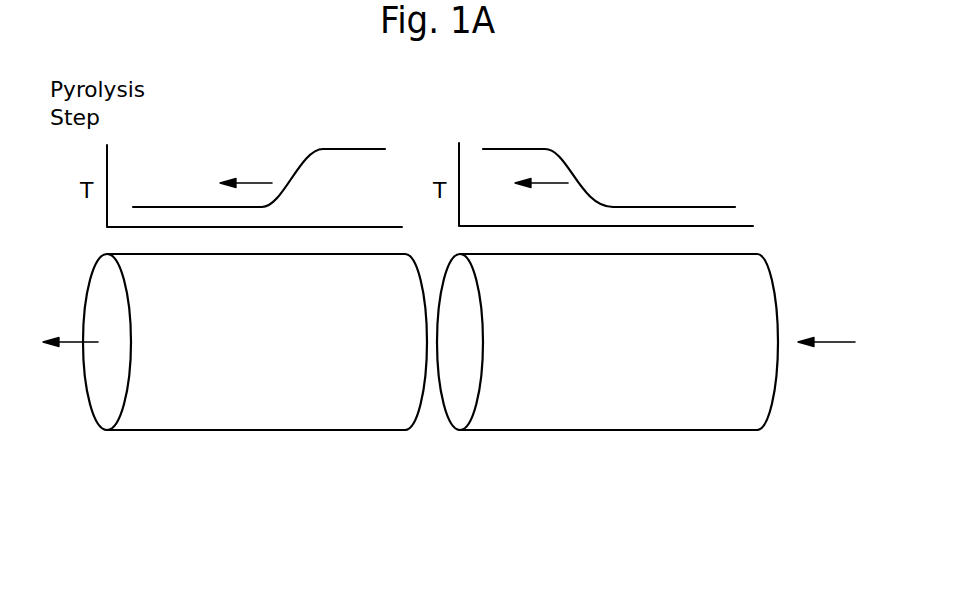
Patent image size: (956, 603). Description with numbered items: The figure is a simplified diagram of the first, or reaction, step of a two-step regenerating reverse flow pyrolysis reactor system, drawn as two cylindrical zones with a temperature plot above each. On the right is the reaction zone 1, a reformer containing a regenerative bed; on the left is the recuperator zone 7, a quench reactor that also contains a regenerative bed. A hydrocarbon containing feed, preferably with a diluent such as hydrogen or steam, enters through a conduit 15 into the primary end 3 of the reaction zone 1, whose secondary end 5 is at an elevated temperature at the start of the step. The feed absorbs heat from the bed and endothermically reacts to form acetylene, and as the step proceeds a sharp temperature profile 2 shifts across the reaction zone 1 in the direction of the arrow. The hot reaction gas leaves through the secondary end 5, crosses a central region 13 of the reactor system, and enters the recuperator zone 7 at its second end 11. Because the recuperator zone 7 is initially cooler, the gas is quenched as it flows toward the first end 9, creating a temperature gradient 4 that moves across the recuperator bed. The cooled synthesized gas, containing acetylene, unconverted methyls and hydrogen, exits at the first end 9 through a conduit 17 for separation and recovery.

The reaction zone 1 is at (616, 397).
The temperature profile 2 is at (567, 158).
The primary end 3 is at (775, 387).
The temperature gradient 4 is at (330, 149).
The secondary end 5 is at (463, 373).
The recuperator zone 7 is at (259, 399).
The first end 9 is at (110, 402).
The second end 11 is at (422, 400).
The central region 13 is at (430, 282).
The conduit 15 is at (827, 340).
The conduit 17 is at (80, 340).